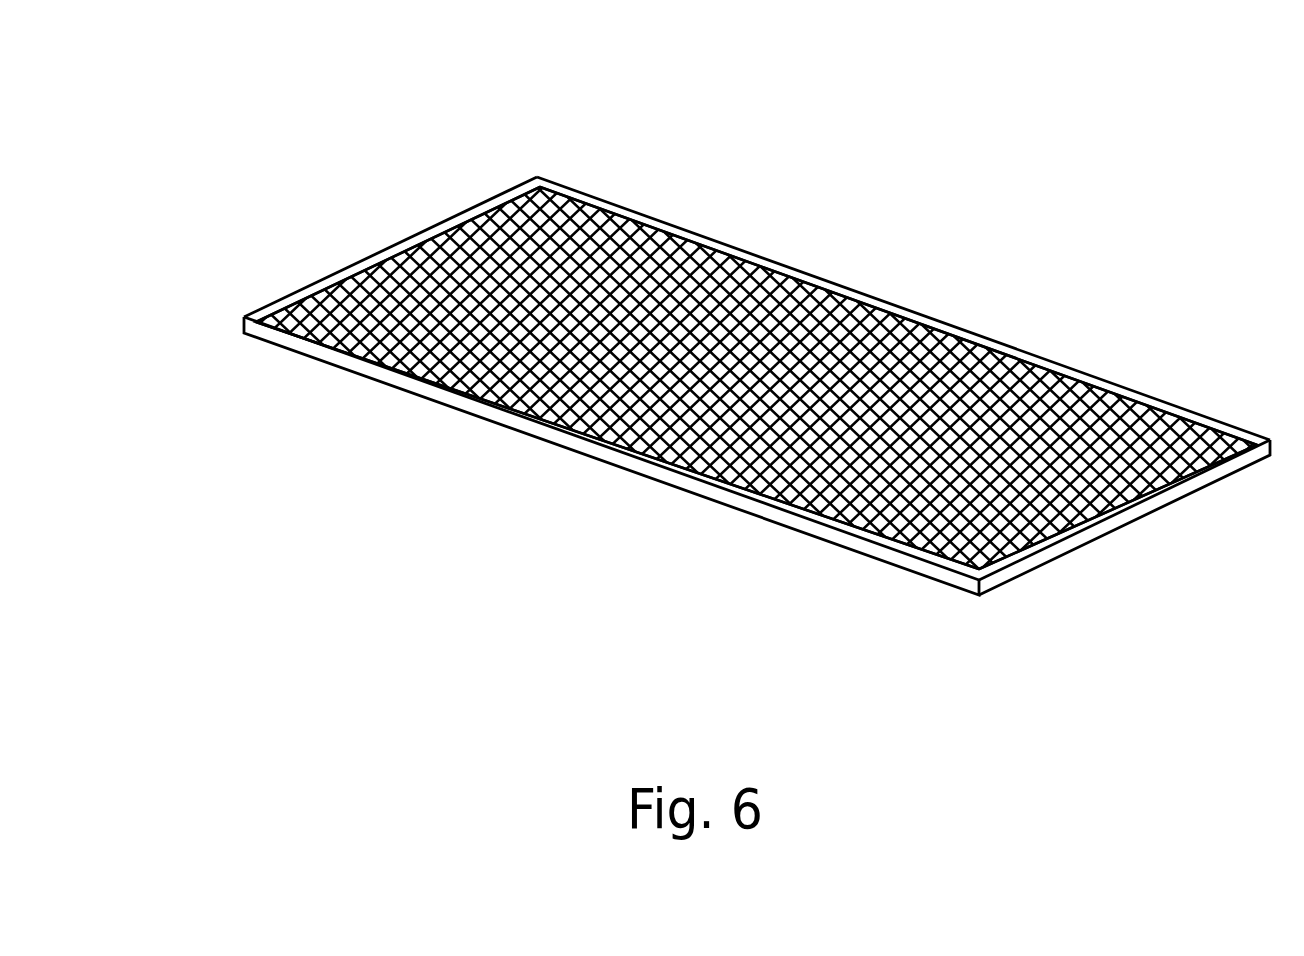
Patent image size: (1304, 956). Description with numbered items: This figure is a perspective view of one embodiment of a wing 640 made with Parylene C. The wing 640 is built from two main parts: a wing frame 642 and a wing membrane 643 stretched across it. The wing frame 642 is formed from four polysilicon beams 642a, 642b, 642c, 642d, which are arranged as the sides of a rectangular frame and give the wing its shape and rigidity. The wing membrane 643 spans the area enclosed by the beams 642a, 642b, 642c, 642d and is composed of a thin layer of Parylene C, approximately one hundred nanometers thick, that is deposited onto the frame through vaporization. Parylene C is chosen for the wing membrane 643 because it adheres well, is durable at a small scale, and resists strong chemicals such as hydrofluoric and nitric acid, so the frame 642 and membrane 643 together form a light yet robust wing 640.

The wing 640 is at (703, 381).
The wing frame 642 is at (703, 443).
The polysilicon beam 642a is at (723, 505).
The polysilicon beam 642b is at (312, 288).
The polysilicon beam 642c is at (1102, 378).
The polysilicon beam 642d is at (1015, 579).
The wing membrane 643 is at (528, 242).